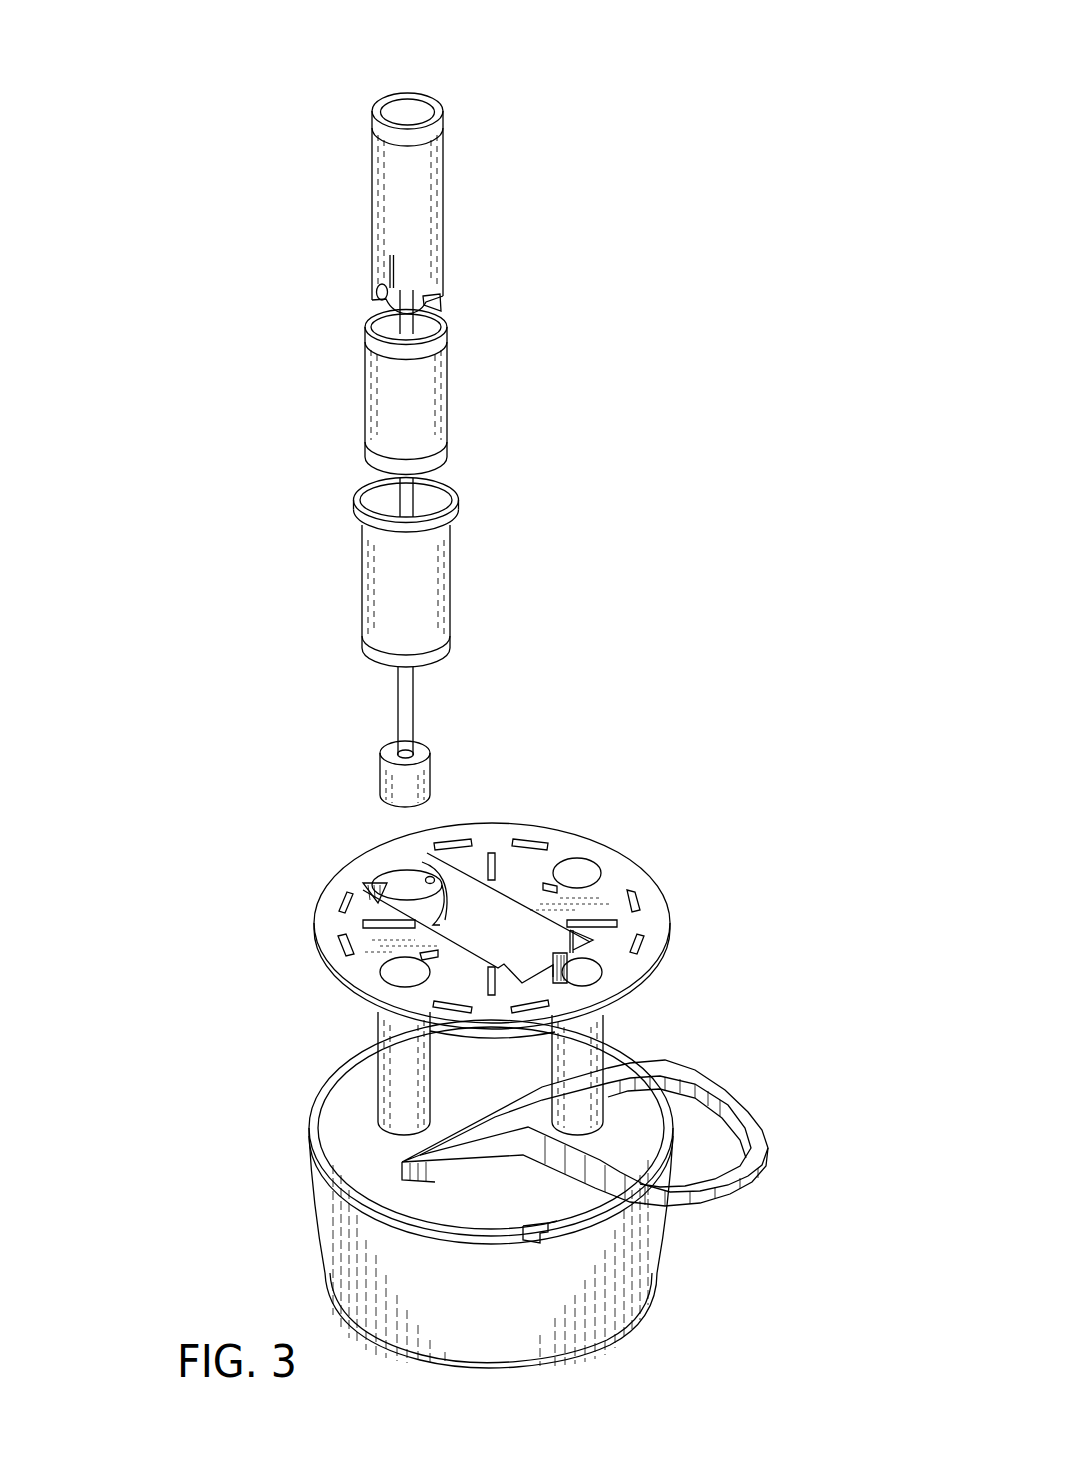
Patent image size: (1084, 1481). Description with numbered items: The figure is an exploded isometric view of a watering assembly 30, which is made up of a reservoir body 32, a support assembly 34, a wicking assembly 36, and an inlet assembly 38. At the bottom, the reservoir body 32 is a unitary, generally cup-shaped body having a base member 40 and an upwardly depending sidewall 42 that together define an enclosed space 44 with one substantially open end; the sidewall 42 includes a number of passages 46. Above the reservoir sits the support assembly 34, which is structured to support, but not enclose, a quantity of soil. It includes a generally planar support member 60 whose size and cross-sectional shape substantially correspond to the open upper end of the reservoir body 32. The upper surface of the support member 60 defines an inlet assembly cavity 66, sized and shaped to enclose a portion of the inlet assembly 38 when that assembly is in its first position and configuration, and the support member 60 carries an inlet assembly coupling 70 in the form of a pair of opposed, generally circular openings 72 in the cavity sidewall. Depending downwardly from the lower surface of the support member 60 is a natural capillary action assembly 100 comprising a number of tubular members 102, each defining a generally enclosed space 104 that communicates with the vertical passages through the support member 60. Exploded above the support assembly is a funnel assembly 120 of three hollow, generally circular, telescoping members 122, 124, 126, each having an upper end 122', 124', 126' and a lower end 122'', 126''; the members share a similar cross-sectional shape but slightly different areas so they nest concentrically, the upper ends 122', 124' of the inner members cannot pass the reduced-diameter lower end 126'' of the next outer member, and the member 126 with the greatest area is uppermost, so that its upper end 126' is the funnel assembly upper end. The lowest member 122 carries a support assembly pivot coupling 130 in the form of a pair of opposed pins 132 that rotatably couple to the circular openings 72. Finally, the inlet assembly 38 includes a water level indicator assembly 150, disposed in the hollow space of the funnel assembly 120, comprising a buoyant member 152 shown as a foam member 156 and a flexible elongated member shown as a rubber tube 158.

The watering assembly 30 is at (330, 1316).
The reservoir body 32 is at (362, 1252).
The support assembly 34 is at (336, 948).
The wicking assembly 36 is at (734, 1222).
The inlet assembly 38 is at (562, 352).
The base member 40 is at (588, 1345).
The sidewall 42 is at (615, 1277).
The enclosed space 44 is at (345, 1132).
The passages 46 is at (534, 1236).
The support member 60 is at (578, 850).
The inlet assembly cavity 66 is at (508, 930).
The inlet assembly coupling 70 is at (428, 879).
The circular openings 72 is at (375, 887).
The natural capillary action assembly 100 is at (603, 972).
The tubular members 102 is at (590, 1045).
The enclosed space 104 is at (587, 958).
The funnel assembly 120 is at (395, 82).
The funnel assembly member 122 is at (417, 206).
The upper end 122' is at (468, 114).
The lower end 122'' is at (473, 281).
The funnel assembly member 124 is at (453, 373).
The upper end 124' is at (465, 389).
The funnel assembly member 126 is at (459, 586).
The upper end 126' is at (475, 505).
The lower end 126'' is at (468, 641).
The support assembly pivot coupling 130 is at (375, 292).
The pins 132 is at (377, 294).
The water level indicator assembly 150 is at (405, 715).
The buoyant member 152 is at (395, 792).
The foam member 156 is at (380, 766).
The rubber tube 158 is at (413, 690).